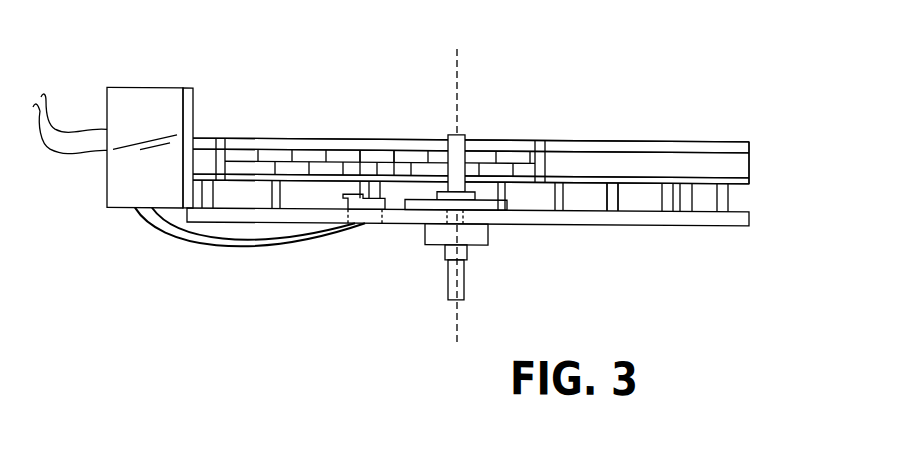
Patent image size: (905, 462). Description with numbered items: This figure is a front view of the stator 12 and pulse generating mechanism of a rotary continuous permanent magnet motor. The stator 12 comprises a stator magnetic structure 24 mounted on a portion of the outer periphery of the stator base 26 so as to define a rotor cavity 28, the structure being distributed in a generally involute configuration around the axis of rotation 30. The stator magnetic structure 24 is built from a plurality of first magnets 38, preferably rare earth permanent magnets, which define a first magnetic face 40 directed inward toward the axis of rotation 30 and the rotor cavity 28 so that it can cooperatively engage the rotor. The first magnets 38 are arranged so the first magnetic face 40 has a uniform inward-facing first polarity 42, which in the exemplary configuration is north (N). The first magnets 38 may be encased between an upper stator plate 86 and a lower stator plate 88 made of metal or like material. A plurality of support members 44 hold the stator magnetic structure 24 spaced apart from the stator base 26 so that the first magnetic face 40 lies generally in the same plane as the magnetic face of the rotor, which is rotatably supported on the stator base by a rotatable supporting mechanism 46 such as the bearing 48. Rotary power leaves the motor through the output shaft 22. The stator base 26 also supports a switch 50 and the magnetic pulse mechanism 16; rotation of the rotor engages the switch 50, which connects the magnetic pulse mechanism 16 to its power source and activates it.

The stator 12 is at (628, 87).
The magnetic pulse mechanism 16 is at (158, 118).
The output shaft 22 is at (448, 288).
The stator magnetic structure 24 is at (575, 142).
The stator base 26 is at (592, 222).
The rotor cavity 28 is at (635, 203).
The axis of rotation 30 is at (458, 68).
The first magnets 38 is at (281, 149).
The first magnetic face 40 is at (385, 160).
The first polarity 42 is at (243, 150).
The support members 44 is at (688, 203).
The rotatable supporting mechanism 46 is at (482, 253).
The bearing 48 is at (430, 233).
The switch 50 is at (360, 190).
The upper stator plate 86 is at (730, 145).
The lower stator plate 88 is at (745, 178).